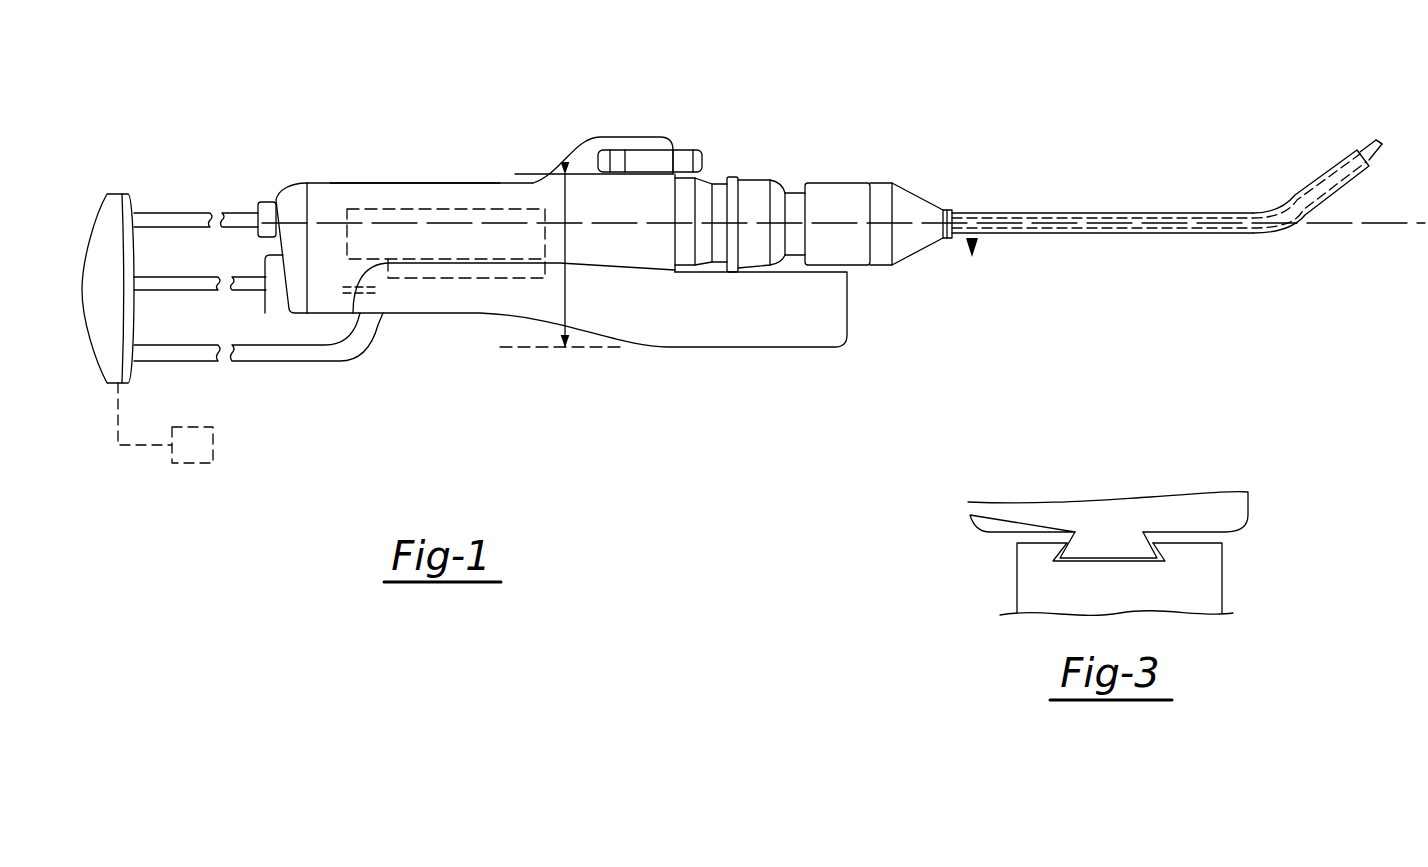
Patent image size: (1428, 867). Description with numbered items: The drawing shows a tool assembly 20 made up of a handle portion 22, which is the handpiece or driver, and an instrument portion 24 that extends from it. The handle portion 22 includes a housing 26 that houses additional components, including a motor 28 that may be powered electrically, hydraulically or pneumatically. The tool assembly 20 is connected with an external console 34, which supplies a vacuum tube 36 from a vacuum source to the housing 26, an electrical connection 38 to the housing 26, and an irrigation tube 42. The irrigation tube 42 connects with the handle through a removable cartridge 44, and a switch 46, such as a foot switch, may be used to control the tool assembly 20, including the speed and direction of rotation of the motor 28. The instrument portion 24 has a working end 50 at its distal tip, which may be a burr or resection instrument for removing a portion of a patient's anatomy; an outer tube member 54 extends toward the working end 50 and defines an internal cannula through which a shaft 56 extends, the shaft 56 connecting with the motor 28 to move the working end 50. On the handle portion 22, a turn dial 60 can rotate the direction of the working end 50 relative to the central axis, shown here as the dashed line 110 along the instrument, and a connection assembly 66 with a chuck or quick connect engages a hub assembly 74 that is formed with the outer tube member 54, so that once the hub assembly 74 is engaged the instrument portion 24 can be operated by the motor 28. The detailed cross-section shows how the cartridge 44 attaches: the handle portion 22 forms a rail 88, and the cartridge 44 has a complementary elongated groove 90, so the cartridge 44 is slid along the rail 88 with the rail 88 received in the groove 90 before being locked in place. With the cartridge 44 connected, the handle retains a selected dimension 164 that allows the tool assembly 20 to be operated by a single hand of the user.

In FIG. 1, the tool assembly 20 is at (787, 102).
In FIG. 1, the handle portion 22 is at (446, 183).
In FIG. 3, the handle portion 22 is at (968, 528).
In FIG. 1, the instrument portion 24 is at (1177, 200).
In FIG. 1, the housing 26 is at (418, 183).
In FIG. 1, the motor 28 is at (378, 208).
In FIG. 1, the console 34 is at (118, 193).
In FIG. 1, the vacuum tube 36 is at (250, 210).
In FIG. 1, the electrical connection 38 is at (265, 302).
In FIG. 1, the irrigation tube 42 is at (298, 362).
In FIG. 1, the cartridge 44 is at (435, 315).
In FIG. 3, the cartridge 44 is at (1015, 588).
In FIG. 1, the switch 46 is at (213, 445).
In FIG. 1, the working end 50 is at (1381, 140).
In FIG. 1, the outer tube member 54 is at (1097, 213).
In FIG. 1, the shaft 56 is at (1197, 213).
In FIG. 1, the turn dial 60 is at (686, 150).
In FIG. 1, the connection assembly 66 is at (757, 177).
In FIG. 1, the hub assembly 74 is at (824, 190).
In FIG. 1, the rail 88 is at (476, 275).
In FIG. 3, the rail 88 is at (1107, 550).
In FIG. 1, the groove 90 is at (352, 290).
In FIG. 3, the groove 90 is at (1160, 548).
In FIG. 1, the longitudinal axis 110 is at (1390, 224).
In FIG. 1, the dimension 164 is at (565, 295).